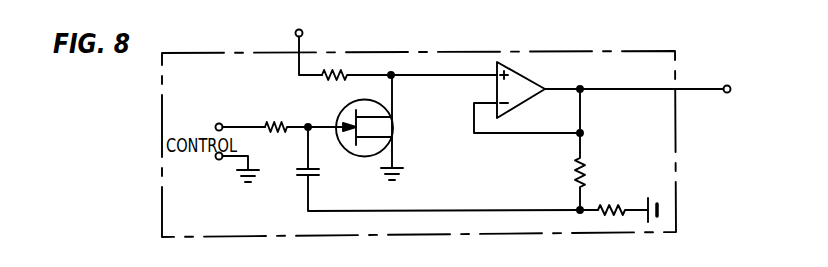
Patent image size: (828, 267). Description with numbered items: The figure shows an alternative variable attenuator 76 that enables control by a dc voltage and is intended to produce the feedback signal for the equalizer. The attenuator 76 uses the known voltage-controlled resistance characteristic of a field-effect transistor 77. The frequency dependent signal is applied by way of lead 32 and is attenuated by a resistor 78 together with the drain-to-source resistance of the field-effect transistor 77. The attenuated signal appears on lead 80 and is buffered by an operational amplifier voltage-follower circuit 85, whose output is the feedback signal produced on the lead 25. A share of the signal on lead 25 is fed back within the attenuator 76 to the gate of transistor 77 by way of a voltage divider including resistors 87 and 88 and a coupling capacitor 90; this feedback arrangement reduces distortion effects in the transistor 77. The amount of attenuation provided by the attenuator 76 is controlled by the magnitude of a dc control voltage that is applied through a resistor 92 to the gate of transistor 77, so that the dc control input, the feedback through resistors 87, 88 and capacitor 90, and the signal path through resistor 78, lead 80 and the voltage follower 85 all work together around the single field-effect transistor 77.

The variable attenuator 76 is at (195, 85).
The lead 32 is at (302, 44).
The resistor 78 is at (345, 74).
The lead 80 is at (443, 77).
The resistor 92 is at (286, 122).
The coupling capacitor 90 is at (320, 172).
The field-effect transistor 77 is at (393, 128).
The operational amplifier voltage-follower circuit 85 is at (556, 121).
The lead 25 is at (715, 87).
The resistor 87 is at (576, 174).
The resistor 88 is at (607, 202).